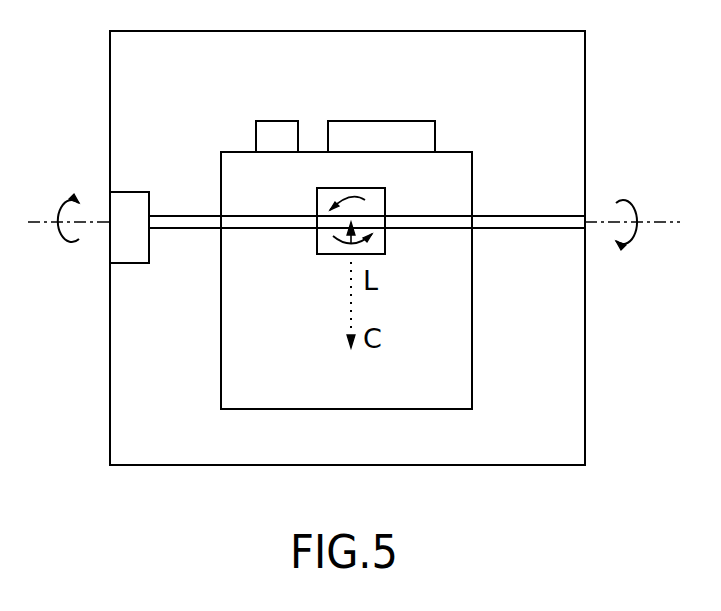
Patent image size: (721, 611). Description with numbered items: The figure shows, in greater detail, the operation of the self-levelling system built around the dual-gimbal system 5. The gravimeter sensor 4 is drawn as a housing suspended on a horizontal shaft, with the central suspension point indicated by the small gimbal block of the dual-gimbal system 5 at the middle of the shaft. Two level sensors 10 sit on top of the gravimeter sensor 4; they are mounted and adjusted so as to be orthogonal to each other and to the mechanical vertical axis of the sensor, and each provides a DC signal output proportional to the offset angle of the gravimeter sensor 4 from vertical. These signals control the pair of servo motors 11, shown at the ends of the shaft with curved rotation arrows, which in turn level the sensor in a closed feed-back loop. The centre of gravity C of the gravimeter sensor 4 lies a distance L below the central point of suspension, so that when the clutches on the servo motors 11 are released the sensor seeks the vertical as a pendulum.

The gravimeter sensor 4 is at (445, 389).
The dual-gimbal system 5 is at (310, 237).
The level sensors 10 is at (369, 117).
The servo motors 11 is at (100, 243).